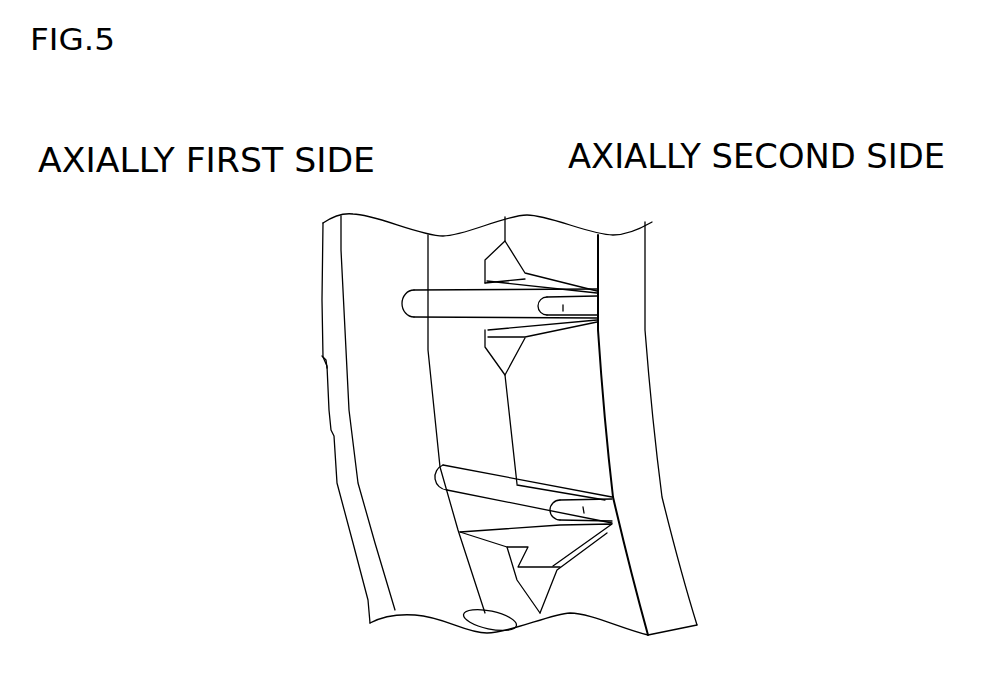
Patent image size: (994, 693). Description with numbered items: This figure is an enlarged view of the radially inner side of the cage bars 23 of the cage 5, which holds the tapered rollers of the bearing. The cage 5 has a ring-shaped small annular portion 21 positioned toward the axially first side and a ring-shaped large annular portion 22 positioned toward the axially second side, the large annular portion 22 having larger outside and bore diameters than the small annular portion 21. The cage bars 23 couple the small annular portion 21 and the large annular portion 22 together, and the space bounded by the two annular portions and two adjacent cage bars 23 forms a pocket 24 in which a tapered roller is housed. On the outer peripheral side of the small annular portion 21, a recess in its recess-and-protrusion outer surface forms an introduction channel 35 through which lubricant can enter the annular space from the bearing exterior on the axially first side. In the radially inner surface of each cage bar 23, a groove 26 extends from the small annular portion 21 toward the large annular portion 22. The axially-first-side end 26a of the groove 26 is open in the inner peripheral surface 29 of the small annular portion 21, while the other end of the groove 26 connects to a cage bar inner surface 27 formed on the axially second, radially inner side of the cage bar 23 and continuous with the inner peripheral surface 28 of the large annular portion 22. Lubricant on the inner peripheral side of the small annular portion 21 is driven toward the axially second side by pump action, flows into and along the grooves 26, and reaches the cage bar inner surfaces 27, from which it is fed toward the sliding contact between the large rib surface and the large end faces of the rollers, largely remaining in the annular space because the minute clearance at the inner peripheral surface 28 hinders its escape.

The cage 5 is at (660, 452).
The small annular portion 21 is at (318, 320).
The large annular portion 22 is at (648, 367).
The cage bar 23 is at (447, 282).
The pocket 24 is at (442, 406).
The groove 26 is at (473, 303).
The axially-first-side end of the groove 26a is at (402, 303).
The cage bar inner surface 27 is at (585, 303).
The inner peripheral surface of the large annular portion 28 is at (627, 428).
The inner peripheral surface of the small annular portion 29 is at (370, 442).
The introduction channel 35 is at (328, 388).